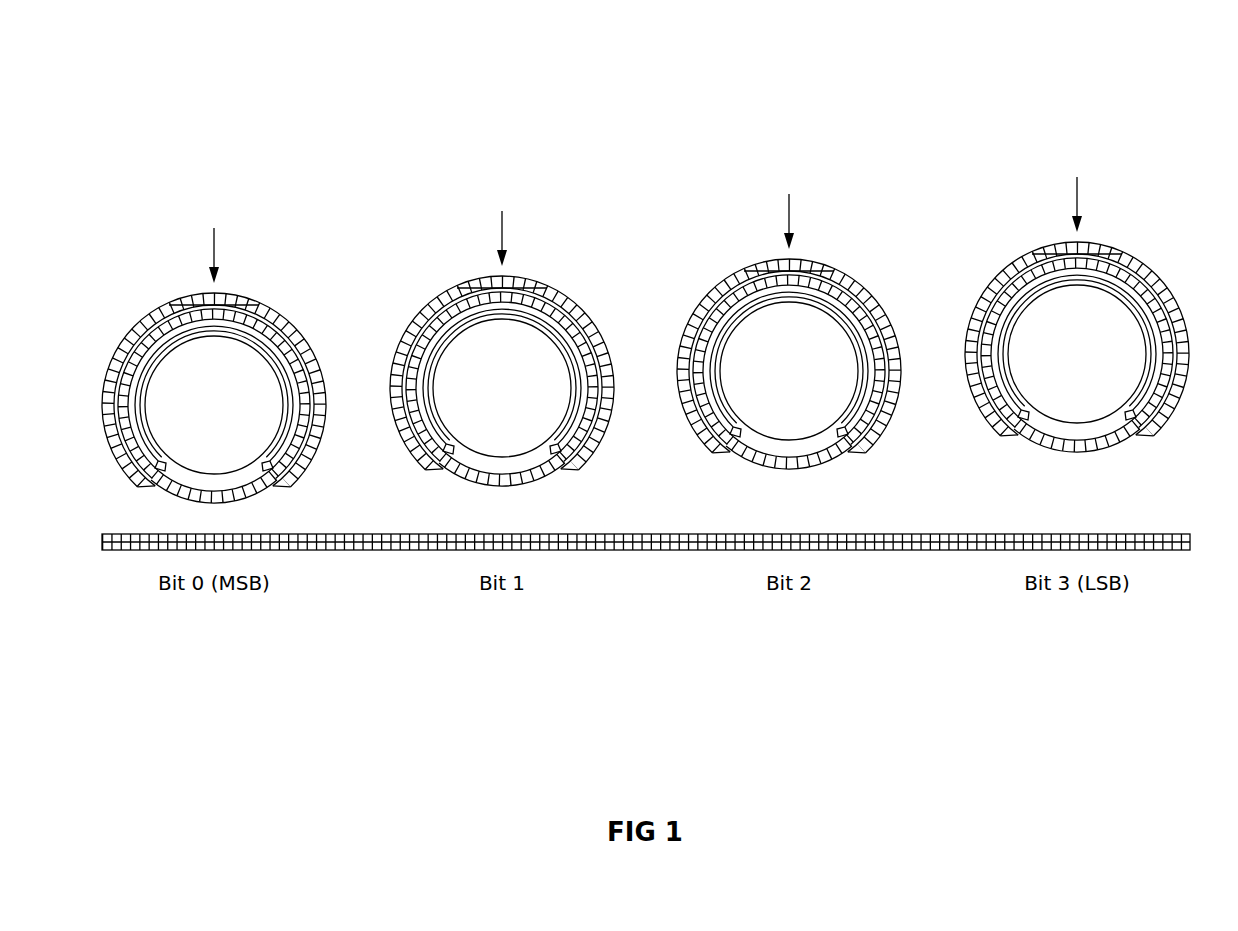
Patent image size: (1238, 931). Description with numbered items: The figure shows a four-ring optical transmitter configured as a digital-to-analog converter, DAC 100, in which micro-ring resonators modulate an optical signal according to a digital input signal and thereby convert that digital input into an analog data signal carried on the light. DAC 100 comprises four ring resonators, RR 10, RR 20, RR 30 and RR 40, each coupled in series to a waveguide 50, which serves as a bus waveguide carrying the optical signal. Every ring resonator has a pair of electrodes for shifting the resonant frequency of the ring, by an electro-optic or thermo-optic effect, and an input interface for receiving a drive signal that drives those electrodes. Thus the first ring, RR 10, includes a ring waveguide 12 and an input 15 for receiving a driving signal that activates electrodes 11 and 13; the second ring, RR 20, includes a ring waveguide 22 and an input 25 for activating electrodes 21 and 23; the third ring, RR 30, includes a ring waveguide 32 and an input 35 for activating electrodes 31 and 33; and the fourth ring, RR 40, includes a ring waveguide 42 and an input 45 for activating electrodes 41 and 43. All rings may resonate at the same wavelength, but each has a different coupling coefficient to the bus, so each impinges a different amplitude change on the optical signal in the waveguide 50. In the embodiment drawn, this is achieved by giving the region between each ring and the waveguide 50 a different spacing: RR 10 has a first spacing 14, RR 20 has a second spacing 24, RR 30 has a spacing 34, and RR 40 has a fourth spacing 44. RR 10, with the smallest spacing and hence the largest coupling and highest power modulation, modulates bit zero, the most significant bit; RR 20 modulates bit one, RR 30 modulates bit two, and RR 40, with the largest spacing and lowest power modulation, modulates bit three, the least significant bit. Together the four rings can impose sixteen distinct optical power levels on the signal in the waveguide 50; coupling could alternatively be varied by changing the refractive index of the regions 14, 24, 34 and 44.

The DAC 100 is at (178, 131).
The waveguide 50 is at (112, 552).
The RR 10 is at (214, 405).
The electrode 11 is at (214, 349).
The ring waveguide 12 is at (214, 348).
The electrode 13 is at (223, 361).
The first spacing 14 is at (220, 505).
The input 15 is at (170, 242).
The RR 20 is at (502, 388).
The electrode 21 is at (502, 332).
The ring waveguide 22 is at (502, 331).
The electrode 23 is at (510, 343).
The second spacing 24 is at (507, 495).
The input 25 is at (458, 233).
The RR 30 is at (789, 371).
The electrode 31 is at (789, 316).
The ring waveguide 32 is at (789, 314).
The electrode 33 is at (798, 326).
The spacing 34 is at (796, 479).
The input 35 is at (746, 208).
The RR 40 is at (1077, 354).
The electrode 41 is at (1077, 299).
The ring waveguide 42 is at (1077, 298).
The electrode 43 is at (1087, 313).
The fourth spacing 44 is at (1080, 462).
The input 45 is at (1033, 191).